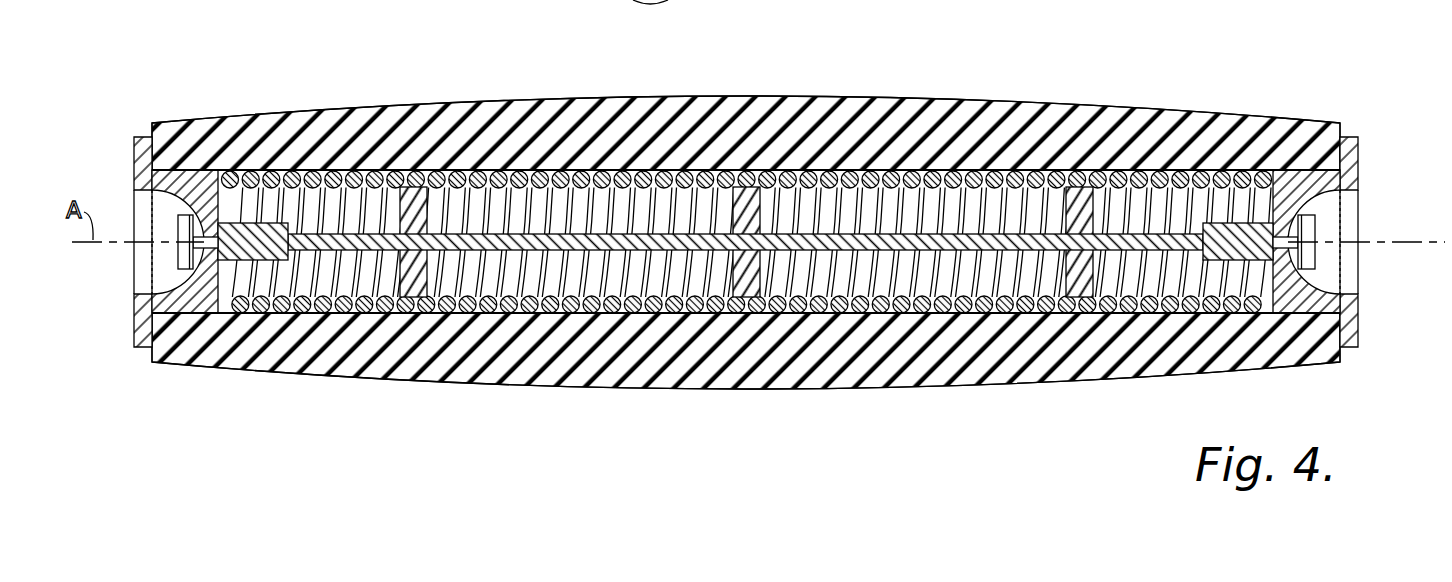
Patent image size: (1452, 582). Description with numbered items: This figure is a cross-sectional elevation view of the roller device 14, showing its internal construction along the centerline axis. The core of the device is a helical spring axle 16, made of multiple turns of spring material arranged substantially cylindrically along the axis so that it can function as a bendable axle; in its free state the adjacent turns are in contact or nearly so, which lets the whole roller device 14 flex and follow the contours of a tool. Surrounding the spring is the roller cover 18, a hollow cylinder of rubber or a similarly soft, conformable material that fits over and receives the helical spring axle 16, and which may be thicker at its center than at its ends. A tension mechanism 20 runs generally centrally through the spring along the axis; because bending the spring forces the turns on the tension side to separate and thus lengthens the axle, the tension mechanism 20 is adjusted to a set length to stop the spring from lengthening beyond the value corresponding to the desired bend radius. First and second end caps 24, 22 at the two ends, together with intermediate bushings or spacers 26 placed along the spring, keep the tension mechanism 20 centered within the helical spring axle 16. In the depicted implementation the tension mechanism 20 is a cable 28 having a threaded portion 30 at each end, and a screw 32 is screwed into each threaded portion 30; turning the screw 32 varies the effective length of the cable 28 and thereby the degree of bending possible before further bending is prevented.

The roller device 14 is at (1040, 70).
The helical spring axle 16 is at (620, 312).
The roller cover 18 is at (1190, 125).
The tension mechanism 20 is at (368, 262).
The second end cap 22 is at (1350, 152).
The first end cap 24 is at (140, 152).
The spacer 26 is at (420, 268).
The cable 28 is at (1000, 250).
The threaded portion 30 is at (252, 254).
The screw 32 is at (165, 258).